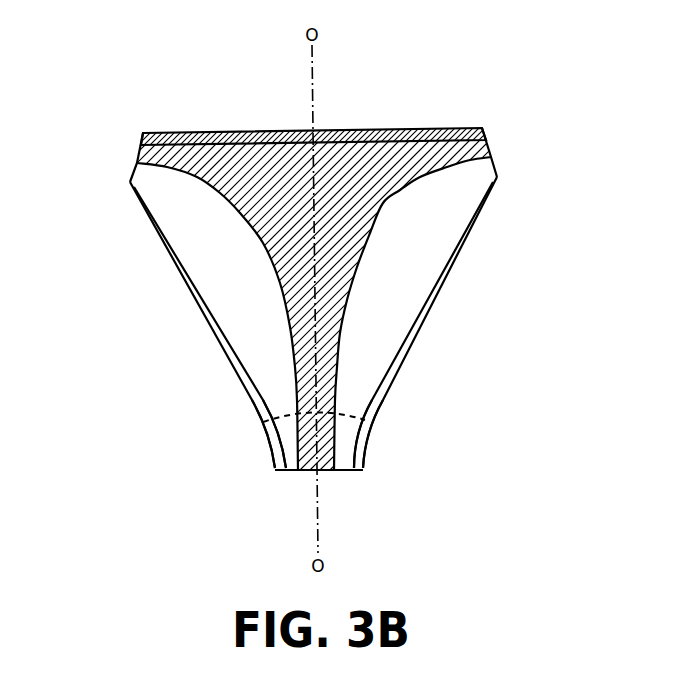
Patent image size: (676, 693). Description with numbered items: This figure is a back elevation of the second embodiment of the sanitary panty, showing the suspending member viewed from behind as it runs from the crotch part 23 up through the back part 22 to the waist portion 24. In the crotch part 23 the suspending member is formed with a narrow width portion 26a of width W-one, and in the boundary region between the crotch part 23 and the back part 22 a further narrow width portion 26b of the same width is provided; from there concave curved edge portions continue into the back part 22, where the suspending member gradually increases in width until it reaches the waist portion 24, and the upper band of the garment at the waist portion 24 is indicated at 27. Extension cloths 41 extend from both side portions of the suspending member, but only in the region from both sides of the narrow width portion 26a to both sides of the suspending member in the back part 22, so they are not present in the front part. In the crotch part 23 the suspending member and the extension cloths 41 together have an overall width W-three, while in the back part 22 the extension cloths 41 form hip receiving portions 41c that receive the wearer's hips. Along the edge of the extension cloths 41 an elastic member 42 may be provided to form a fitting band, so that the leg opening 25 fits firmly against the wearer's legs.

The back part 22 is at (404, 264).
The crotch part 23 is at (351, 481).
The waist portion 24 is at (384, 123).
The leg opening 25 is at (212, 357).
The narrow width portion 26a is at (308, 472).
The narrow width portion 26b is at (293, 375).
The top flange band 27 is at (263, 131).
The extension cloth 41 is at (304, 361).
The hip receiving portion 41c is at (232, 283).
The elastic member 42 is at (170, 245).